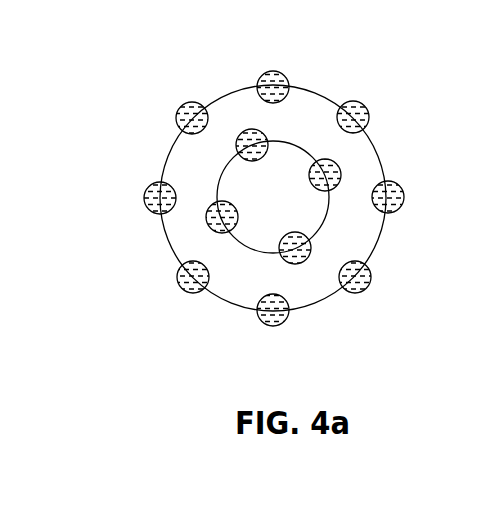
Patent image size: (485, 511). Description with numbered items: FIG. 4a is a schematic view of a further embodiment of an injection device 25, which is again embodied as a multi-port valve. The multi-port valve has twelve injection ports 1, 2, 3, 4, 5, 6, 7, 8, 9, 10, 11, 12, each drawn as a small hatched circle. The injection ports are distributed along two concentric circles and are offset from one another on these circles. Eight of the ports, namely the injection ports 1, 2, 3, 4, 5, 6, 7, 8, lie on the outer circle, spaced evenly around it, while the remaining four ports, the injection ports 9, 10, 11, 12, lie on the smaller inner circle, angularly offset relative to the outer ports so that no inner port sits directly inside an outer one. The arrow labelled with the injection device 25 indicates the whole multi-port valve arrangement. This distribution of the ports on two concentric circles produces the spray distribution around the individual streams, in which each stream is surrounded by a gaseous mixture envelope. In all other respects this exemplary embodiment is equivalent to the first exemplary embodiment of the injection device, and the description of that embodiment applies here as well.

The injection device 25 is at (140, 117).
The injection port 1 is at (273, 71).
The injection port 2 is at (365, 106).
The injection port 3 is at (404, 197).
The injection port 4 is at (366, 288).
The injection port 5 is at (274, 326).
The injection port 6 is at (181, 289).
The injection port 7 is at (144, 199).
The injection port 8 is at (181, 107).
The injection port 9 is at (243, 131).
The injection port 10 is at (340, 168).
The injection port 11 is at (306, 260).
The injection port 12 is at (210, 228).